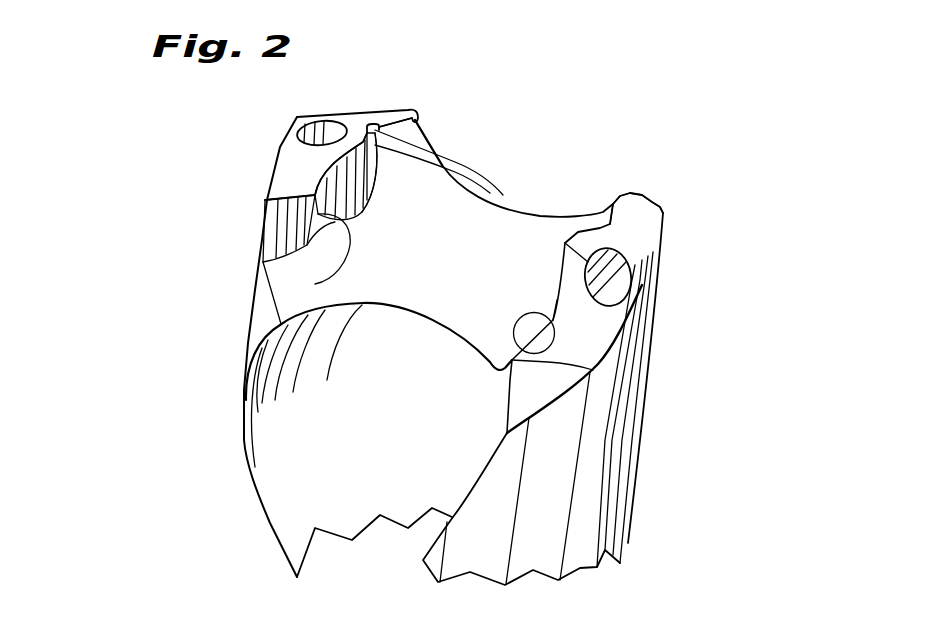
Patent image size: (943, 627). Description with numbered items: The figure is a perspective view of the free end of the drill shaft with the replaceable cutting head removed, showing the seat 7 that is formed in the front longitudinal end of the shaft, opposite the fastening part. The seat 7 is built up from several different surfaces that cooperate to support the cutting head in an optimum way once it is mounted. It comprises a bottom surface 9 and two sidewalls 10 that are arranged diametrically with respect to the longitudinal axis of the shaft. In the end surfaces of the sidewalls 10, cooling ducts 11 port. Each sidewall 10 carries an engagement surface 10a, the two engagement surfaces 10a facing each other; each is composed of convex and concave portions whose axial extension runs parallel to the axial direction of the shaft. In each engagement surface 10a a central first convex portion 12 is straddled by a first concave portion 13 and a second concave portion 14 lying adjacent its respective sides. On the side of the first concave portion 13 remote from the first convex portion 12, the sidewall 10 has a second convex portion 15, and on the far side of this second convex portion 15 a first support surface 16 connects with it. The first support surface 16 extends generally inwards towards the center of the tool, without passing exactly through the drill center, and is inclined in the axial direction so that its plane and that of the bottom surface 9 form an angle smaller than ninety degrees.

The seat 7 is at (452, 227).
The bottom surface 9 is at (548, 242).
The sidewall 10 is at (292, 162).
The engagement surface 10a is at (365, 210).
The cooling duct 11 is at (297, 126).
The first convex portion 12 is at (372, 182).
The first concave portion 13 is at (315, 284).
The second concave portion 14 is at (427, 140).
The second convex portion 15 is at (262, 262).
The first support surface 16 is at (280, 222).